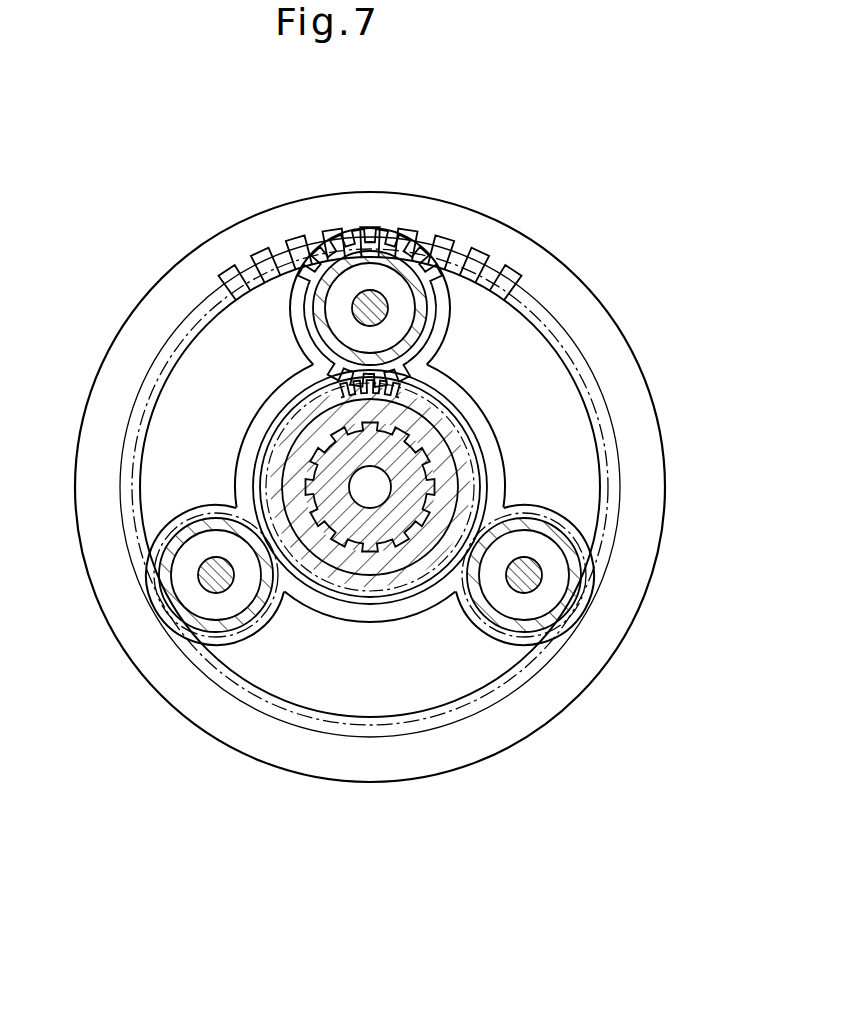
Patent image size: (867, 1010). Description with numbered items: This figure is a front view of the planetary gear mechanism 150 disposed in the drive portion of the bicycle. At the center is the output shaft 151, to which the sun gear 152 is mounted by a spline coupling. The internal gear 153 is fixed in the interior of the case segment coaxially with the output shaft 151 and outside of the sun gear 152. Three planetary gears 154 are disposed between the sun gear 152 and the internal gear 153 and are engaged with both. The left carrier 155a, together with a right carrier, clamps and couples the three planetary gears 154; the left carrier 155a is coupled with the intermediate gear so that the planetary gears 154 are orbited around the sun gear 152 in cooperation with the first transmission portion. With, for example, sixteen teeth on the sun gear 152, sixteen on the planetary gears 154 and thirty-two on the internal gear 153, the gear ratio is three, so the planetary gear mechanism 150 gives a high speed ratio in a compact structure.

The planetary gear mechanism 150 is at (607, 298).
The output shaft 151 is at (378, 533).
The sun gear 152 is at (290, 427).
The internal gear 153 is at (620, 377).
The planetary gears 154 is at (446, 250).
The left carrier 155a is at (558, 472).